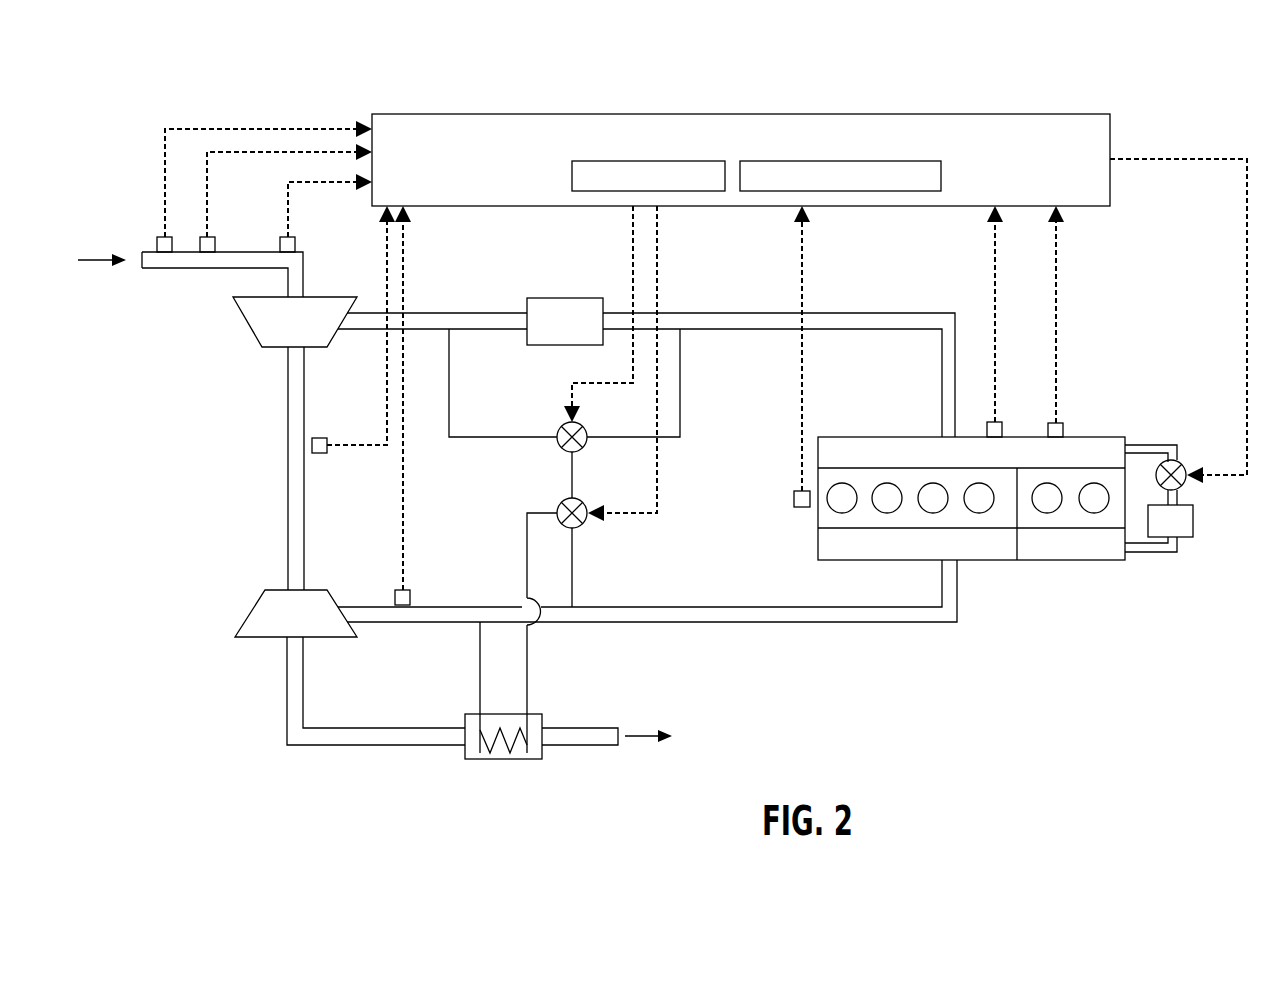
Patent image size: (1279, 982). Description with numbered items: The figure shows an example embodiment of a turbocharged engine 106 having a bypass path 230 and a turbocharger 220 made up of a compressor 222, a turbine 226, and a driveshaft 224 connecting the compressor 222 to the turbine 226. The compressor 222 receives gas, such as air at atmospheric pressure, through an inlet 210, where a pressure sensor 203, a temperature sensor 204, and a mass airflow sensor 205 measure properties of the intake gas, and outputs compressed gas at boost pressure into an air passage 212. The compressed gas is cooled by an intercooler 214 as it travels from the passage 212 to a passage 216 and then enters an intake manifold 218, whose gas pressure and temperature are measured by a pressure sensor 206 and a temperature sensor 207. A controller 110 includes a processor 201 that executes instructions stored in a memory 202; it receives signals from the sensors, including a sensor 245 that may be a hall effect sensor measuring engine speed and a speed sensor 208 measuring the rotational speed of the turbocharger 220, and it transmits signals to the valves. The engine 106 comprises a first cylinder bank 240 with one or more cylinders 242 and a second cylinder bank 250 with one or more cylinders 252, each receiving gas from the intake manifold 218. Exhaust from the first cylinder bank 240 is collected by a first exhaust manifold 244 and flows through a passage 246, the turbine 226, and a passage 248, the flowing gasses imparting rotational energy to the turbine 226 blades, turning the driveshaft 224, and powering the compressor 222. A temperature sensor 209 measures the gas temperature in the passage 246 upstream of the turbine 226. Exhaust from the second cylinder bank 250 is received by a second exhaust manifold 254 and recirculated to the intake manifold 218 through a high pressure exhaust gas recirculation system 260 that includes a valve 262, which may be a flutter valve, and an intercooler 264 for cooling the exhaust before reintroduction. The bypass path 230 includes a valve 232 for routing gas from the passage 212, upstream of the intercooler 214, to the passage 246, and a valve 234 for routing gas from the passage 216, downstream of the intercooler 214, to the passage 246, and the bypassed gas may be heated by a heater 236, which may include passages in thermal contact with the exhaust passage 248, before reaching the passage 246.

The engine 106 is at (947, 735).
The controller 110 is at (741, 160).
The processor 201 is at (840, 176).
The memory 202 is at (648, 176).
The pressure sensor 203 is at (157, 245).
The temperature sensor 204 is at (215, 245).
The mass airflow sensor 205 is at (295, 245).
The pressure sensor 206 is at (1002, 428).
The temperature sensor 207 is at (1063, 429).
The speed sensor 208 is at (320, 453).
The temperature sensor 209 is at (410, 597).
The inlet 210 is at (165, 268).
The air passage 212 is at (436, 313).
The intercooler 214 is at (565, 321).
The passage 216 is at (848, 313).
The intake manifold 218 is at (971, 455).
The turbocharger 220 is at (218, 447).
The compressor 222 is at (295, 322).
The driveshaft 224 is at (288, 506).
The turbine 226 is at (296, 613).
The bypass path 230 is at (539, 459).
The valve 232 is at (584, 426).
The valve 234 is at (585, 527).
The heater 236 is at (510, 753).
The first cylinder bank 240 is at (903, 475).
The cylinders 242 is at (890, 513).
The first exhaust manifold 244 is at (971, 514).
The sensor 245 is at (794, 499).
The passage 246 is at (680, 622).
The passage 248 is at (390, 728).
The second cylinder bank 250 is at (1033, 520).
The cylinders 252 is at (1094, 515).
The second exhaust manifold 254 is at (1071, 543).
The exhaust gas recirculation system 260 is at (1193, 548).
The valve 262 is at (1182, 465).
The intercooler 264 is at (1170, 521).